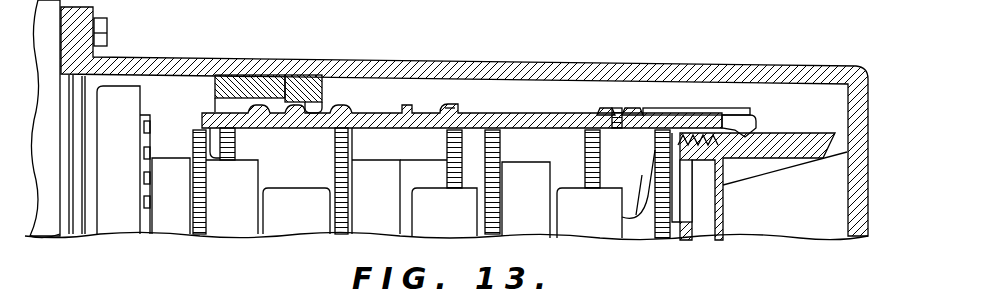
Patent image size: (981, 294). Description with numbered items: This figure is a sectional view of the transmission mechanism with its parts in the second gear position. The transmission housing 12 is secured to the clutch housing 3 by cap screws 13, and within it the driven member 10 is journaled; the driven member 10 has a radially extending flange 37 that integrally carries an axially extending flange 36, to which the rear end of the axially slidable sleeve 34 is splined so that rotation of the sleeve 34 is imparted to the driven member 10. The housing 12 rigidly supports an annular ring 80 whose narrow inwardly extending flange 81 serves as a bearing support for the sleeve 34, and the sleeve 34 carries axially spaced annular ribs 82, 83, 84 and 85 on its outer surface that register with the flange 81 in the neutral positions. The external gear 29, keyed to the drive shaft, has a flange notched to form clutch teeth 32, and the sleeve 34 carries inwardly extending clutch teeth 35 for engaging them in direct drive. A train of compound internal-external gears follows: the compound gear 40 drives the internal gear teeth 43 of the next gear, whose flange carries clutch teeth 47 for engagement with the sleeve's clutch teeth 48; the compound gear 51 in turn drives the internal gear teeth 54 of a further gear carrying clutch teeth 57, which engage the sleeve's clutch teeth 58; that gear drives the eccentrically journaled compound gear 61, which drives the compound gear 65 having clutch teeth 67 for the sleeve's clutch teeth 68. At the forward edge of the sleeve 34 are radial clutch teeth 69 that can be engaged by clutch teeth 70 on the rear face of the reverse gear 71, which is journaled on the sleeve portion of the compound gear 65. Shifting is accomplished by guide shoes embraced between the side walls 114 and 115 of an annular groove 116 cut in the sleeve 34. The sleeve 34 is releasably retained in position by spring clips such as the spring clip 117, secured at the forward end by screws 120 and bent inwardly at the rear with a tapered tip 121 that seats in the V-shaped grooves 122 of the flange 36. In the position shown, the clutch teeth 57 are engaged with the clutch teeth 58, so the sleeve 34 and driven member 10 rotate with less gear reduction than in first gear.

The clutch housing 3 is at (45, 119).
The driven member 10 is at (703, 230).
The transmission housing 12 is at (545, 66).
The cap screws 13 is at (107, 30).
The external gear 29 is at (650, 185).
The clutch teeth 32 is at (656, 146).
The axially slidable sleeve 34 is at (515, 118).
The clutch teeth 35 is at (586, 146).
The axially extending flange 36 is at (770, 150).
The radially extending flange 37 is at (705, 185).
The compound gear 40 is at (589, 213).
The internal gear teeth 43 is at (526, 200).
The clutch teeth 47 is at (498, 146).
The clutch teeth 48 is at (448, 144).
The compound internal-external gear 51 is at (444, 212).
The internal gear teeth 54 is at (376, 181).
The clutch teeth 57 is at (336, 158).
The clutch teeth 58 is at (336, 142).
The compound internal-external gear 61 is at (296, 211).
The compound internal-external gear 65 is at (232, 197).
The clutch teeth 67 is at (194, 135).
The clutch teeth 68 is at (236, 146).
The clutch teeth 69 is at (203, 115).
The clutch teeth 70 is at (142, 146).
The reverse gear 71 is at (118, 160).
The annular ring 80 is at (268, 100).
The inwardly extending flange 81 is at (326, 105).
The annular rib 82 is at (405, 108).
The annular rib 83 is at (365, 108).
The annular rib 84 is at (312, 105).
The annular rib 85 is at (262, 100).
The side wall 114 is at (416, 105).
The side wall 115 is at (450, 112).
The annular groove 116 is at (428, 112).
The spring clip 117 is at (690, 100).
The screws 120 is at (620, 107).
The tapered tip 121 is at (742, 125).
The V-shaped grooves 122 is at (775, 140).